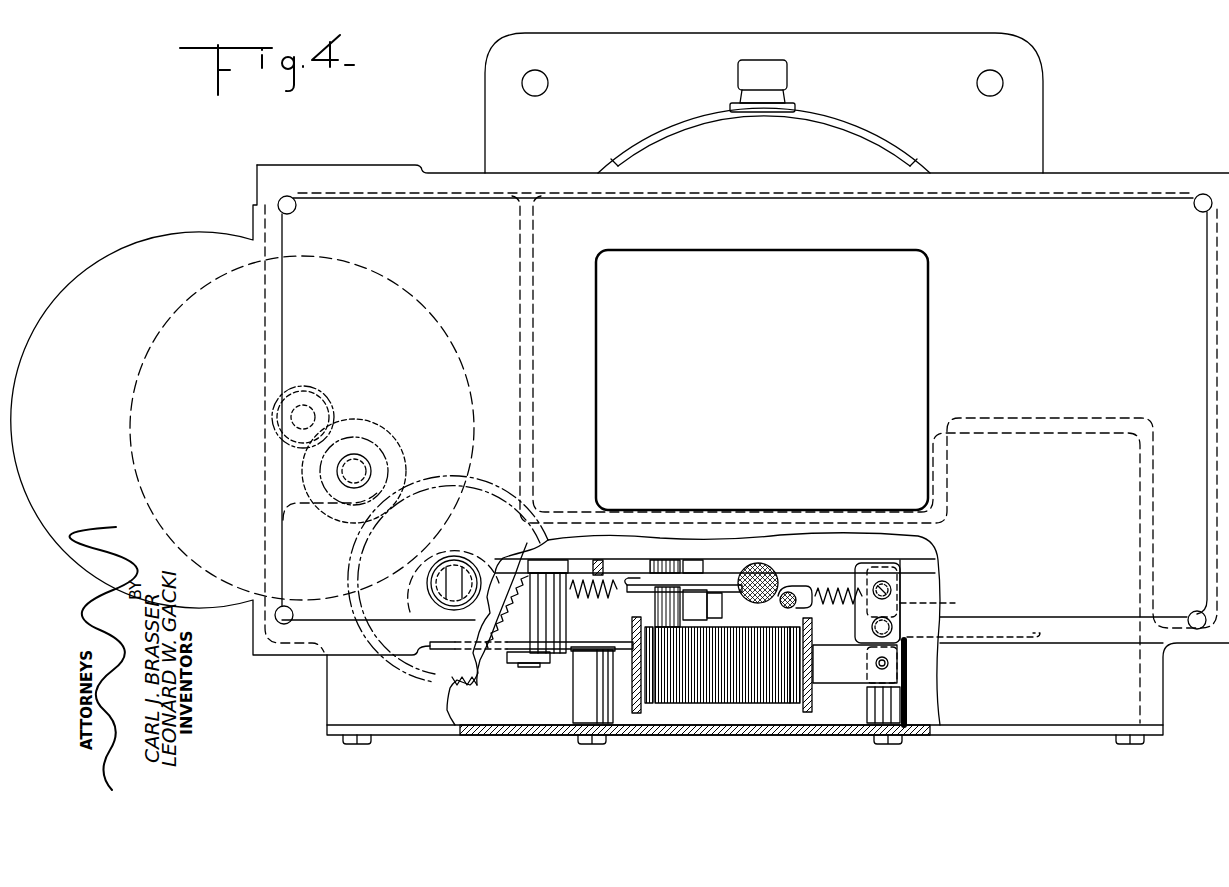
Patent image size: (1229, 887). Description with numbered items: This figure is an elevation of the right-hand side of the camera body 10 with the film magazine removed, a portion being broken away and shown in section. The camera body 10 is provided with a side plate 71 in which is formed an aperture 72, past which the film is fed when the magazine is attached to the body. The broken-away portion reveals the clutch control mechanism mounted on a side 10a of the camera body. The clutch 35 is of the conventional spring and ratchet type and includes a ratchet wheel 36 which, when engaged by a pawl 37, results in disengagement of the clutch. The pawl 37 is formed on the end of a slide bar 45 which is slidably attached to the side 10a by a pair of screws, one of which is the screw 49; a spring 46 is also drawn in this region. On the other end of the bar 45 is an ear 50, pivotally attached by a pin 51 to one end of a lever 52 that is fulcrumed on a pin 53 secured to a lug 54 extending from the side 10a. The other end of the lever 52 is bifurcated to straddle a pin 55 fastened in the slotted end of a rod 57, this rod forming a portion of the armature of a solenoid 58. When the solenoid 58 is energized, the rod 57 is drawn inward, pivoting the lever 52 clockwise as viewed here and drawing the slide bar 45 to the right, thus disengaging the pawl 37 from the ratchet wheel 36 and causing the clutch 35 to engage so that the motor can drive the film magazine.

The camera body 10 is at (1085, 170).
The side of the camera body 10a is at (738, 572).
The side plate 71 is at (1132, 220).
The aperture 72 is at (781, 255).
The clutch 35 is at (465, 687).
The ratchet wheel 36 is at (494, 630).
The pawl 37 is at (553, 575).
The slide bar 45 is at (678, 576).
The spring 46 is at (605, 576).
The screw 49 is at (818, 577).
The ear 50 is at (903, 577).
The pin 51 is at (900, 588).
The lever 52 is at (945, 605).
The pin 53 is at (960, 610).
The lug 54 is at (863, 617).
The pin 55 is at (884, 671).
The rod 57 is at (824, 674).
The solenoid 58 is at (712, 705).